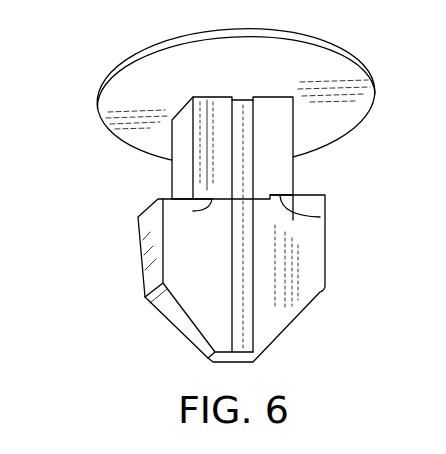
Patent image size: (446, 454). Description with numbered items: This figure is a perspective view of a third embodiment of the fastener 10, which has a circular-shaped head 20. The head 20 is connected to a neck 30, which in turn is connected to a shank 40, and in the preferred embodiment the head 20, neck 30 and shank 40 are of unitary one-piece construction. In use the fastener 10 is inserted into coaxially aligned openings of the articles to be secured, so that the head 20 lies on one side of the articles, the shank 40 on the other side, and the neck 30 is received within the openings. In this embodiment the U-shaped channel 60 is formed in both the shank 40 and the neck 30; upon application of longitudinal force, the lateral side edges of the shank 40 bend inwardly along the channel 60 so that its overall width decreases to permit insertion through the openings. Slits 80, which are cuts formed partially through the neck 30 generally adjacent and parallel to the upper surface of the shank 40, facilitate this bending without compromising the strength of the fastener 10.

The fastener 10 is at (123, 165).
The head 20 is at (352, 105).
The neck 30 is at (271, 175).
The shank 40 is at (298, 272).
The U-shaped channel 60 is at (230, 290).
The slits 80 is at (193, 211).